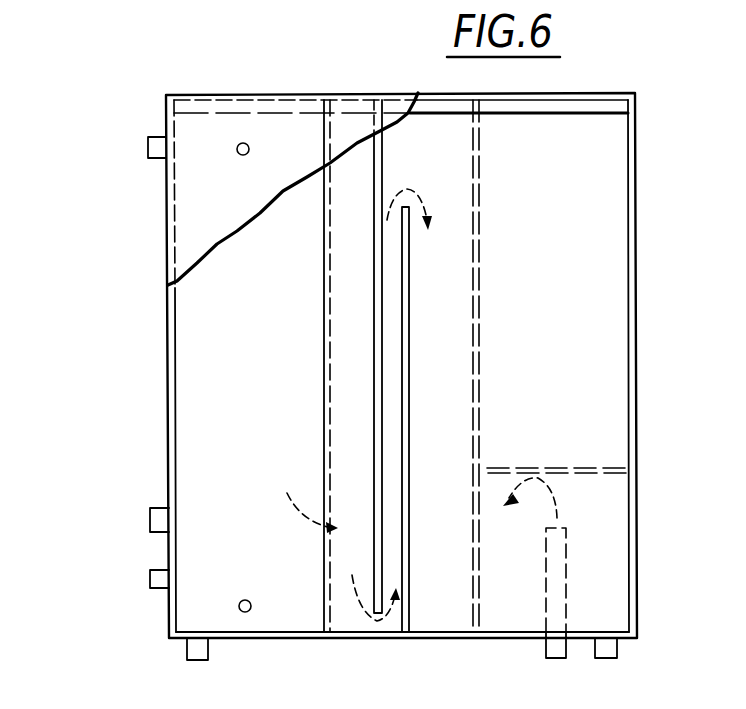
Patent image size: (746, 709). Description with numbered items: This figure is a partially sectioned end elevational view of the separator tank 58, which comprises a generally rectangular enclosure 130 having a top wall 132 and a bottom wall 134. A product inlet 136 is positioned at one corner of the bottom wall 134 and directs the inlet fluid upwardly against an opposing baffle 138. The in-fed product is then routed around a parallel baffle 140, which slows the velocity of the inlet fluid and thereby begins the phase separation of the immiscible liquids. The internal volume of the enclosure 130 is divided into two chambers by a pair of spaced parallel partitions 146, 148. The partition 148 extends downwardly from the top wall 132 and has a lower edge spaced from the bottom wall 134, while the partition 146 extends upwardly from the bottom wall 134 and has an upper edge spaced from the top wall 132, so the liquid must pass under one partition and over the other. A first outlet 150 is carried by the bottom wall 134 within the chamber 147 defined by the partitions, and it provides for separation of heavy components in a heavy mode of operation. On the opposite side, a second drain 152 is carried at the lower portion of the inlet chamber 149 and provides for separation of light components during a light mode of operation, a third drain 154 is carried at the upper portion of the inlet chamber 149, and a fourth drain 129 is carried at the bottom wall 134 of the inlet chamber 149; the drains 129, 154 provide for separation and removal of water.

The separator tank 58 is at (113, 99).
The fourth drain 129 is at (197, 661).
The enclosure 130 is at (645, 95).
The top wall 132 is at (257, 95).
The bottom wall 134 is at (297, 640).
The product inlet 136 is at (547, 647).
The baffle 138 is at (577, 463).
The parallel baffle 140 is at (480, 345).
The partition 146 is at (410, 272).
The chamber 147 is at (618, 247).
The partition 148 is at (383, 158).
The inlet chamber 149 is at (193, 323).
The first outlet 150 is at (618, 655).
The second drain 152 is at (155, 520).
The third drain 154 is at (148, 155).